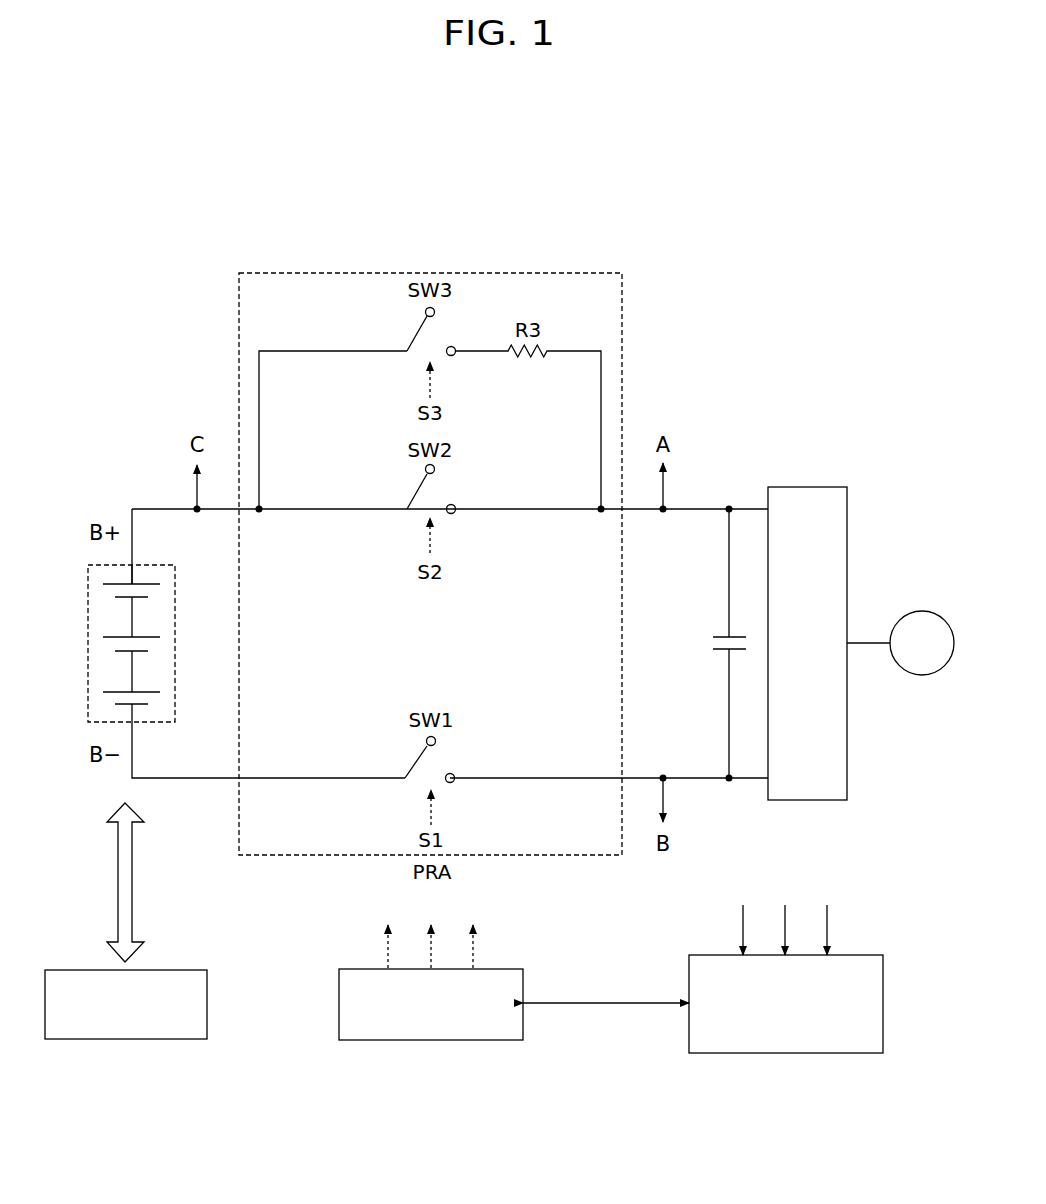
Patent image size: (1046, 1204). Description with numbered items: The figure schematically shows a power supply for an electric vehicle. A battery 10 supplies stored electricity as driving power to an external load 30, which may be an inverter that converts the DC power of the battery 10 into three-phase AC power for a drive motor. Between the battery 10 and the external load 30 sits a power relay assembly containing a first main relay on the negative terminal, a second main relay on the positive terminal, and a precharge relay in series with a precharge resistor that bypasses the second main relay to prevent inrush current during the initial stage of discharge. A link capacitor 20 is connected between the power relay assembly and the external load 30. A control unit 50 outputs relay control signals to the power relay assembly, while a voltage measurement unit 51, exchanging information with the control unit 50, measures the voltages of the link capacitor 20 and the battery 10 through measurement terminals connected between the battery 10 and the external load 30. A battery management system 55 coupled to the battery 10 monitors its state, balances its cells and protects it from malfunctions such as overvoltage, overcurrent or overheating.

The battery 10 is at (154, 562).
The link capacitor 20 is at (710, 643).
The external load 30 is at (811, 483).
The control unit 50 is at (483, 968).
The voltage measurement unit 51 is at (840, 953).
The battery management system 55 is at (182, 968).